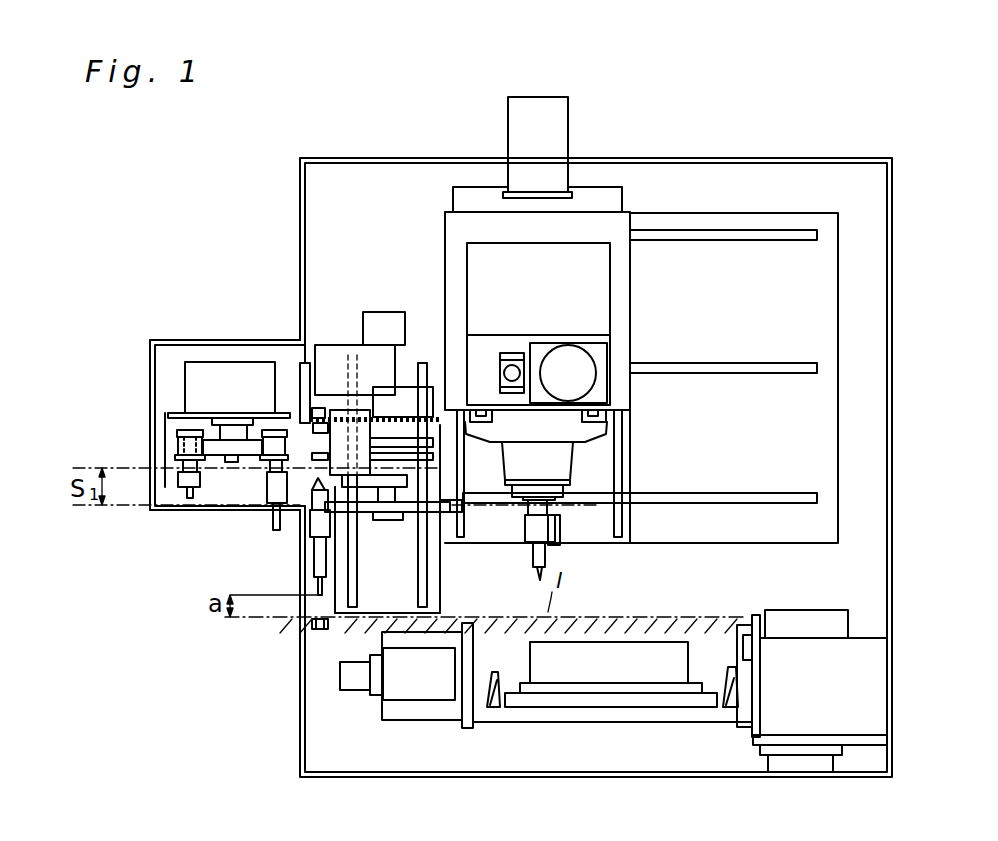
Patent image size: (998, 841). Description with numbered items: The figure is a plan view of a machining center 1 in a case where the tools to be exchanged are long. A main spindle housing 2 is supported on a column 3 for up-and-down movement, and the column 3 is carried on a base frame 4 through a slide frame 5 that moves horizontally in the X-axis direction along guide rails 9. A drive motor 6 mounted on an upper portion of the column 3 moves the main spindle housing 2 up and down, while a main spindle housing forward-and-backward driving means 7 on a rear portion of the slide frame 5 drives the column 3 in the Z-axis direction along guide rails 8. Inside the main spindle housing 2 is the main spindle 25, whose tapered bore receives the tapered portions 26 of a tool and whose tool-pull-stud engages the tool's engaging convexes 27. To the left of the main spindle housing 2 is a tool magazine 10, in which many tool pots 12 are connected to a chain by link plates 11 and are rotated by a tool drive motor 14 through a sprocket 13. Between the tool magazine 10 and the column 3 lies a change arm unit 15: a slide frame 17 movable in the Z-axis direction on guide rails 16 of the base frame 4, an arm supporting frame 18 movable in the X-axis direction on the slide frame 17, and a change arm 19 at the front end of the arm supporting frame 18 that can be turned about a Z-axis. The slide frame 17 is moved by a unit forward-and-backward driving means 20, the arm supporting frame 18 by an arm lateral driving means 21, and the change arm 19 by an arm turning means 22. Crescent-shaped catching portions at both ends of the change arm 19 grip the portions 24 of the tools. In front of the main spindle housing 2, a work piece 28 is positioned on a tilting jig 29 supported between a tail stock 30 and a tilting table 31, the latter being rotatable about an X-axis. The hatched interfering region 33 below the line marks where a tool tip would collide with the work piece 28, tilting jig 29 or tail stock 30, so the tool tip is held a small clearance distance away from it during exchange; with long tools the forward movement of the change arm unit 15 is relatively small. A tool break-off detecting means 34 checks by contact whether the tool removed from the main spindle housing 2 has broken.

The machining center 1 is at (762, 152).
The main spindle housing 2 is at (555, 447).
The column 3 is at (456, 222).
The base frame 4 is at (838, 315).
The slide frame 5 is at (475, 186).
The drive motor 6 is at (565, 375).
The main spindle housing forward-and-backward driving means 7 is at (552, 116).
The guide rails 8 is at (465, 525).
The guide rails 9 is at (800, 241).
The tool magazine 10 is at (178, 372).
The link plates 11 is at (176, 433).
The tool pots 12 is at (176, 443).
The sprocket 13 is at (232, 445).
The tool drive motor 14 is at (208, 362).
The change arm unit 15 is at (398, 312).
The guide rails 16 is at (426, 600).
The slide frame 17 is at (400, 400).
The arm supporting frame 18 is at (345, 412).
The change arm 19 is at (415, 525).
The unit forward-and-backward driving means 20 is at (375, 311).
The arm lateral driving means 21 is at (305, 362).
The arm turning means 22 is at (384, 521).
The portions 24 is at (185, 482).
The main spindle 25 is at (558, 490).
The tapered portions 26 is at (316, 487).
The engaging convexes 27 is at (320, 473).
The work piece 28 is at (680, 648).
The tilting jig 29 is at (630, 712).
The tail stock 30 is at (422, 685).
The tilting table 31 is at (870, 683).
The interfering region 33 is at (628, 625).
The tool break-off detecting means 34 is at (316, 628).